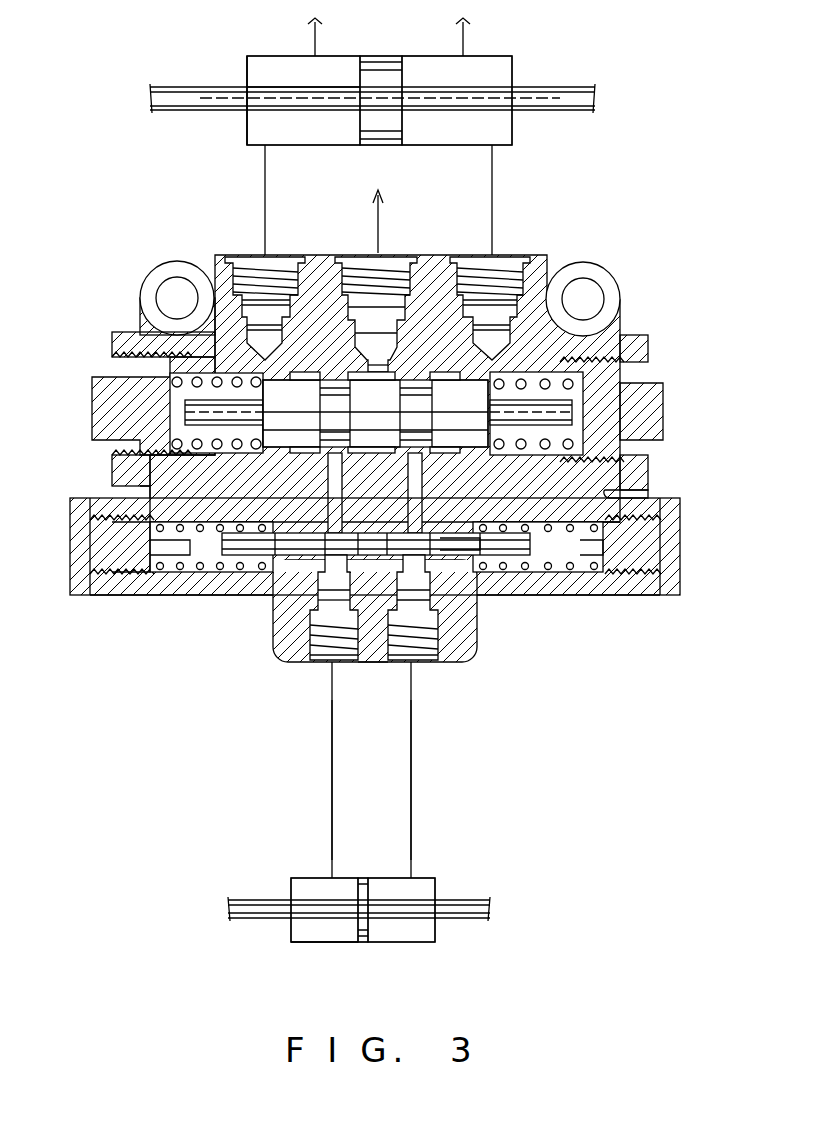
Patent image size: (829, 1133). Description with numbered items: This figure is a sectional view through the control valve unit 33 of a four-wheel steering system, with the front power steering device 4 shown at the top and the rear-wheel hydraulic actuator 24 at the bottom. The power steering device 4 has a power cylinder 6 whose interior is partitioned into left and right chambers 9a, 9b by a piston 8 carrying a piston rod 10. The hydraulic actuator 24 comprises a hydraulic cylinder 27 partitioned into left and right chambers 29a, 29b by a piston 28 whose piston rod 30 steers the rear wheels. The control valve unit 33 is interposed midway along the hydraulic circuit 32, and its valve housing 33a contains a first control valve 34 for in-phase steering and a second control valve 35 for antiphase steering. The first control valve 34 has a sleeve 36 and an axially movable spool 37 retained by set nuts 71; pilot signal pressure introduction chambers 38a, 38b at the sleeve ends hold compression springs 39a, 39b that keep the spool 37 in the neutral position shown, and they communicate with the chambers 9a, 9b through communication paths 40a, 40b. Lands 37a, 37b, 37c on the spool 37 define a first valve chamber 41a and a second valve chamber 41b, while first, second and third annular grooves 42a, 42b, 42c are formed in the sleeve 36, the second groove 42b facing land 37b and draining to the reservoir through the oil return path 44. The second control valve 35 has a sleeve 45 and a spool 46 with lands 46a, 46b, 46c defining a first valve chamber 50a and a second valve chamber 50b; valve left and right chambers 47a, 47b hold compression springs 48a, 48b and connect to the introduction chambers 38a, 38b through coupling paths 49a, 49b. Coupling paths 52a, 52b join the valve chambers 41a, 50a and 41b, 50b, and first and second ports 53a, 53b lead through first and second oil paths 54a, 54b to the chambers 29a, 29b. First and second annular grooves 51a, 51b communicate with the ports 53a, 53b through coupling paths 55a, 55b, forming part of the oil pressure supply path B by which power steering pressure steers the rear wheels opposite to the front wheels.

The power steering device 4 is at (522, 66).
The power cylinder 6 is at (277, 56).
The piston 8 is at (393, 60).
The left chamber 9a is at (255, 72).
The right chamber 9b is at (510, 130).
The piston rod 10 is at (203, 112).
The communication path 40a is at (266, 206).
The communication path 40b is at (493, 206).
The sleeve 36 is at (422, 307).
The oil return path 44 is at (380, 218).
The first control valve 34 is at (205, 265).
The control valve unit 33 is at (606, 258).
The pilot signal pressure introduction chamber 38a is at (115, 340).
The pilot signal pressure introduction chamber 38b is at (560, 392).
The set nut 71 is at (125, 336).
The compression spring 39a is at (172, 382).
The compression spring 39b is at (585, 440).
The coupling path 49a is at (240, 488).
The coupling path 49b is at (500, 500).
The spool 37 is at (563, 413).
The land 37a is at (283, 372).
The land 37b is at (396, 355).
The land 37c is at (470, 350).
The first annular groove 42a is at (309, 300).
The second annular groove 42b is at (372, 330).
The third annular groove 42c is at (489, 300).
The first valve chamber 41a is at (330, 345).
The second valve chamber 41b is at (441, 345).
The coupling path 52a is at (375, 412).
The coupling path 52b is at (460, 413).
The first valve chamber 50a is at (330, 666).
The second valve chamber 50b is at (428, 666).
The valve housing 33a is at (627, 602).
The second control valve 35 is at (540, 597).
The sleeve 45 is at (212, 594).
The spool 46 is at (272, 594).
The land 46a is at (272, 612).
The land 46b is at (372, 665).
The land 46c is at (477, 594).
The valve left chamber 47a is at (166, 566).
The valve right chamber 47b is at (572, 566).
The compression spring 48a is at (186, 576).
The compression spring 48b is at (540, 574).
The oil pressure supply path B is at (118, 576).
The first annular groove 51a is at (306, 640).
The second annular groove 51b is at (455, 655).
The first port 53a is at (319, 664).
The second port 53b is at (446, 668).
The coupling path 55a is at (320, 668).
The coupling path 55b is at (456, 668).
The hydraulic circuit 32 is at (414, 784).
The first oil path 54a is at (330, 810).
The second oil path 54b is at (413, 818).
The hydraulic actuator 24 is at (436, 950).
The left chamber 29a is at (302, 878).
The right chamber 29b is at (425, 878).
The piston 28 is at (363, 944).
The hydraulic cylinder 27 is at (315, 944).
The piston rod 30 is at (483, 899).